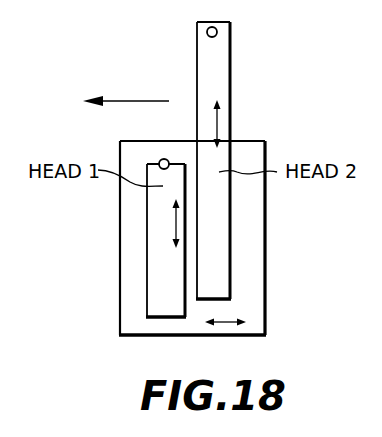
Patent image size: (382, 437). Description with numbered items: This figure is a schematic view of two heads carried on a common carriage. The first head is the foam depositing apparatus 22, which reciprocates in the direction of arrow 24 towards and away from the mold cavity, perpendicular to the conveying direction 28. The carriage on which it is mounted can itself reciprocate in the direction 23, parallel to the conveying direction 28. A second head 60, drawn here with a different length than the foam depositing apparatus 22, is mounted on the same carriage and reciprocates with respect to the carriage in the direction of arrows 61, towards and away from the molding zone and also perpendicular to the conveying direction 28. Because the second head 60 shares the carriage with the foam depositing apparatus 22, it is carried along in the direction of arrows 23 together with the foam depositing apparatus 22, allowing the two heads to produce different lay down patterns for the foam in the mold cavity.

The foam depositing apparatus 22 is at (157, 274).
The direction of carriage reciprocation 23 is at (233, 323).
The direction of reciprocation of the foam depositing apparatus 24 is at (176, 218).
The conveying direction 28 is at (148, 101).
The second head 60 is at (221, 76).
The direction of reciprocation of the second head 61 is at (221, 123).